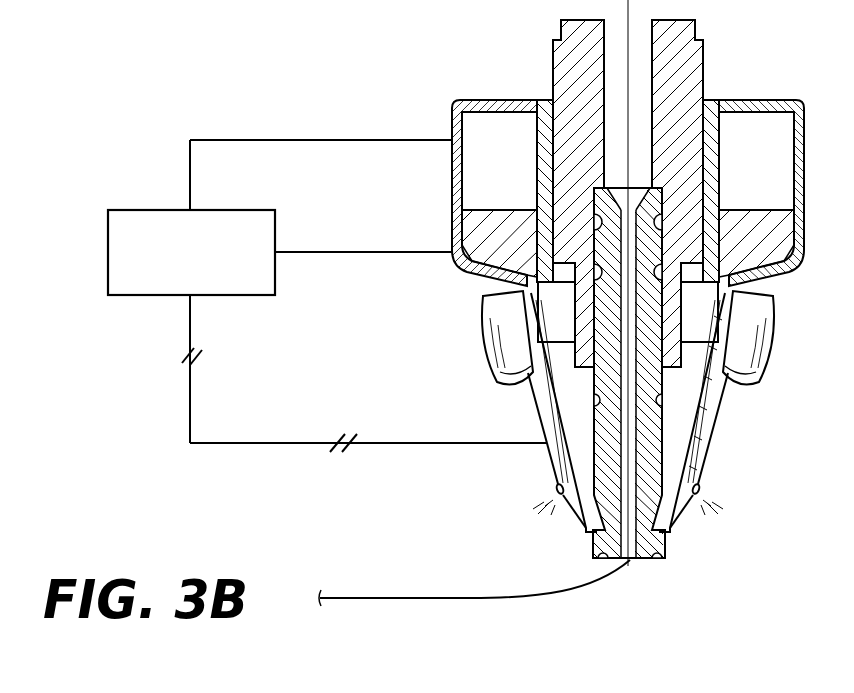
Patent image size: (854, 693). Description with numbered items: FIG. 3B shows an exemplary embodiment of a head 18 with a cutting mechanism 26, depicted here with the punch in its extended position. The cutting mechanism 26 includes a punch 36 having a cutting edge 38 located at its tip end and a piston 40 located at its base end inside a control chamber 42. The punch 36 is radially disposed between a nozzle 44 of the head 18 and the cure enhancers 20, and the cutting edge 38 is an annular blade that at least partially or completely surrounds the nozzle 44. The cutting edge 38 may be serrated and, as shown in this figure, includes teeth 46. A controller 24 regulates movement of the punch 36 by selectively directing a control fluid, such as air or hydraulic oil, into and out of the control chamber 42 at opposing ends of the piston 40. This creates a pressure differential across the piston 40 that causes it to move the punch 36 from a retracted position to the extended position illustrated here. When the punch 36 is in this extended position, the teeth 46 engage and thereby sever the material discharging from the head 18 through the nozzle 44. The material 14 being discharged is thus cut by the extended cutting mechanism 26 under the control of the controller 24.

The head 18 is at (143, 111).
The controller 24 is at (180, 276).
The cutting mechanism 26 is at (470, 89).
The control chamber 42 is at (507, 188).
The piston 40 is at (506, 251).
The punch 36 is at (548, 395).
The cure enhancers 20 is at (708, 494).
The cutting edge 38 is at (666, 545).
The nozzle 44 is at (650, 545).
The teeth 46 is at (656, 559).
The fluid stream 14 is at (380, 598).